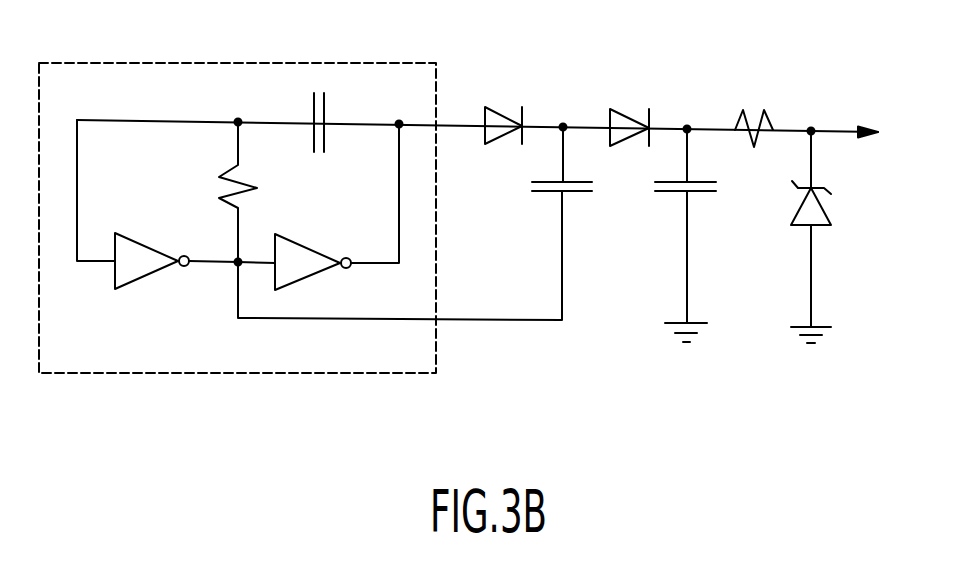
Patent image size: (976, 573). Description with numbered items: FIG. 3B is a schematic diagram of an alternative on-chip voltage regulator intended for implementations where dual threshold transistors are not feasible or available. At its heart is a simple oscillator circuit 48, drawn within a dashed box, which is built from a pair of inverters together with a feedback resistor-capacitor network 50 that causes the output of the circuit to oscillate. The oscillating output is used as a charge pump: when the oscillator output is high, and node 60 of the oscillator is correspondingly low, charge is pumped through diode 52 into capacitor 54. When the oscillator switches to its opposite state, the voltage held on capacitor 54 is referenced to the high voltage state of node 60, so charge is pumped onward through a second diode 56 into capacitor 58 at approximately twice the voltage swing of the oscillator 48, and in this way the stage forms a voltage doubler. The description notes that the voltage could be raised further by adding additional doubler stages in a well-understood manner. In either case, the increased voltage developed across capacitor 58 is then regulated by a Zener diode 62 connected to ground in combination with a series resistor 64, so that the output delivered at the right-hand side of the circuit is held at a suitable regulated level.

The oscillator circuit 48 is at (430, 66).
The feedback resistor-capacitor network 50 is at (312, 169).
The diode 52 is at (503, 108).
The capacitor 54 is at (543, 193).
The diode 56 is at (628, 110).
The capacitor 58 is at (667, 193).
The node 60 is at (235, 264).
The Zener diode 62 is at (825, 210).
The resistor 64 is at (771, 109).